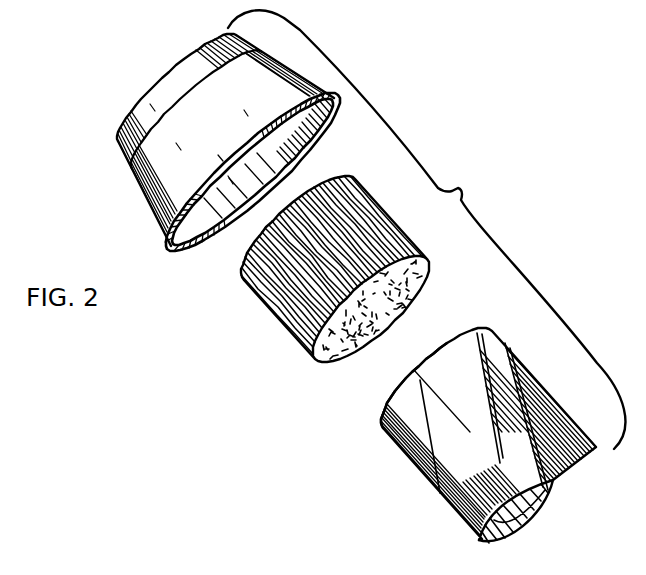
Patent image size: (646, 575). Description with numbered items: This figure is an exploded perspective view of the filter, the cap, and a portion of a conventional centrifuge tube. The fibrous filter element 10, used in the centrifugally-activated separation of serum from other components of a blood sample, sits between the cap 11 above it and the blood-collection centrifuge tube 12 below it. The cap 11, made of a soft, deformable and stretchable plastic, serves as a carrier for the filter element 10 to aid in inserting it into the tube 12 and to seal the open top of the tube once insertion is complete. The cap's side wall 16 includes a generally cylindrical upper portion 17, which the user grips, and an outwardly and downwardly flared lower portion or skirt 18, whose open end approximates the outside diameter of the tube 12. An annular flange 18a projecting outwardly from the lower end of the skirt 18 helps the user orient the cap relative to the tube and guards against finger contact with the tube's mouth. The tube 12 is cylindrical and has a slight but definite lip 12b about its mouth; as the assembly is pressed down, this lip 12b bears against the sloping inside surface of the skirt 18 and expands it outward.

The fibrous filter element 10 is at (283, 322).
The cap 11 is at (148, 197).
The blood-collection centrifuge tube 12 is at (428, 490).
The lip 12b is at (445, 353).
The side wall 16 is at (288, 83).
The upper portion 17 is at (119, 148).
The skirt 18 is at (269, 80).
The annular flange 18a is at (168, 240).